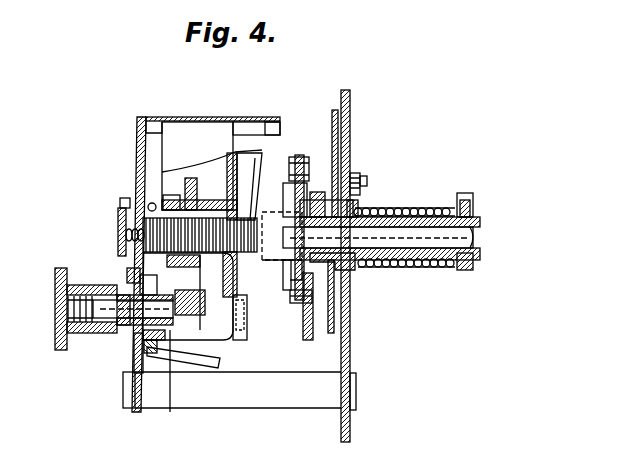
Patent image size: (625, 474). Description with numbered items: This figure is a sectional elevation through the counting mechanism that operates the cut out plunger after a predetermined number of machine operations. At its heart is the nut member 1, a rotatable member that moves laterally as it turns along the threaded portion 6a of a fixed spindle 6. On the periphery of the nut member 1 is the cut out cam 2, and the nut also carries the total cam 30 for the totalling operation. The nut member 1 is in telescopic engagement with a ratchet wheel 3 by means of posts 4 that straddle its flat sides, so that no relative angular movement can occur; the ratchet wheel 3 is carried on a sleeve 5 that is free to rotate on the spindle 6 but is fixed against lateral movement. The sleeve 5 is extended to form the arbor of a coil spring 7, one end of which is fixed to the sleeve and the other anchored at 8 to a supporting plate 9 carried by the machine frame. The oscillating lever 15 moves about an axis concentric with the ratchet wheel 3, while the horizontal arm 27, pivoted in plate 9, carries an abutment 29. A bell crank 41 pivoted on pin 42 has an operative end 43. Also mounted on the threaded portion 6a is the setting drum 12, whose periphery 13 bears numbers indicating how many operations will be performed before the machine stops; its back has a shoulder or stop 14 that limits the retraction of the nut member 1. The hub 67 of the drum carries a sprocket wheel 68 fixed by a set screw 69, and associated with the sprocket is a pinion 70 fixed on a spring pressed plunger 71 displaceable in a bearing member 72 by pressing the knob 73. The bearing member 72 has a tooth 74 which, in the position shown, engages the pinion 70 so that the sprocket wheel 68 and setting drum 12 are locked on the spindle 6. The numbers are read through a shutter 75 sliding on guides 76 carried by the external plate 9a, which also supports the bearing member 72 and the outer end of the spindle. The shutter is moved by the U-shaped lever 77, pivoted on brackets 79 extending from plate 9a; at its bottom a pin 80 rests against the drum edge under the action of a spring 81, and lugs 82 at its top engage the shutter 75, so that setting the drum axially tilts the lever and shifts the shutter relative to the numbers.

The nut member 1 is at (352, 200).
The cut out cam 2 is at (290, 290).
The ratchet wheel 3 is at (340, 262).
The posts 4 is at (285, 266).
The sleeve 5 is at (396, 208).
The spindle 6 is at (415, 268).
The threaded portion 6a is at (250, 226).
The coil spring 7 is at (440, 209).
The anchorage 8 is at (367, 182).
The supporting plate 9 is at (350, 102).
The external plate 9a is at (137, 135).
The setting drum 12 is at (208, 352).
The periphery of setting drum 13 is at (205, 122).
The shoulder or stop 14 is at (255, 335).
The oscillating lever 15 is at (334, 112).
The horizontal arm 27 is at (308, 341).
The abutment 29 is at (300, 303).
The total cam 30 is at (319, 194).
The bell crank 41 is at (304, 166).
The pivot pin 42 is at (299, 180).
The operative end 43 is at (286, 247).
The hub 67 is at (240, 160).
The sprocket wheel 68 is at (145, 268).
The set screw 69 is at (163, 200).
The pinion 70 is at (138, 350).
The spring pressed plunger 71 is at (100, 322).
The bearing member 72 is at (130, 335).
The knob 73 is at (55, 287).
The tooth 74 is at (238, 383).
The shutter 75 is at (177, 118).
The guides 76 is at (152, 121).
The U-shaped lever 77 is at (252, 160).
The ears or brackets 79 is at (148, 207).
The pin 80 is at (152, 353).
The spring 81 is at (199, 188).
The lugs 82 is at (262, 122).